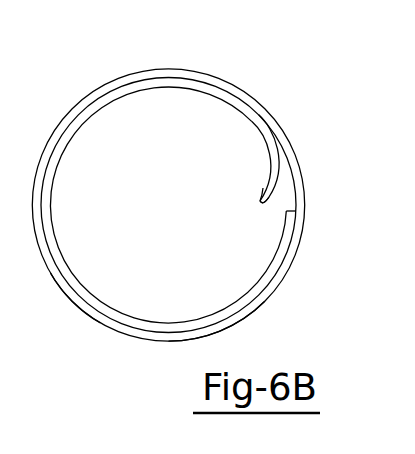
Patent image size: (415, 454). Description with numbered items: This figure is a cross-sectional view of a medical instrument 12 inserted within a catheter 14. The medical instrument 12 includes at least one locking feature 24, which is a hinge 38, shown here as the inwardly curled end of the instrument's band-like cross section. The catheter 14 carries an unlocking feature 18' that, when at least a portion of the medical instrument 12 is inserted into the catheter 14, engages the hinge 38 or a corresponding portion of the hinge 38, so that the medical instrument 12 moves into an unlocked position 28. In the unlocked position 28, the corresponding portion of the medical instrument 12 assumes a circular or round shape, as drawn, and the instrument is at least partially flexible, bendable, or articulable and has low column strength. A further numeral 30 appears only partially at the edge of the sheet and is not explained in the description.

The medical instrument 12 is at (98, 81).
The catheter 14 is at (252, 322).
The unlocking feature 18' is at (208, 194).
The locking feature 24 is at (263, 203).
The hinge 38 is at (263, 203).
The unlocked position 28 is at (54, 332).
The partially visible numeral 30 is at (36, 449).